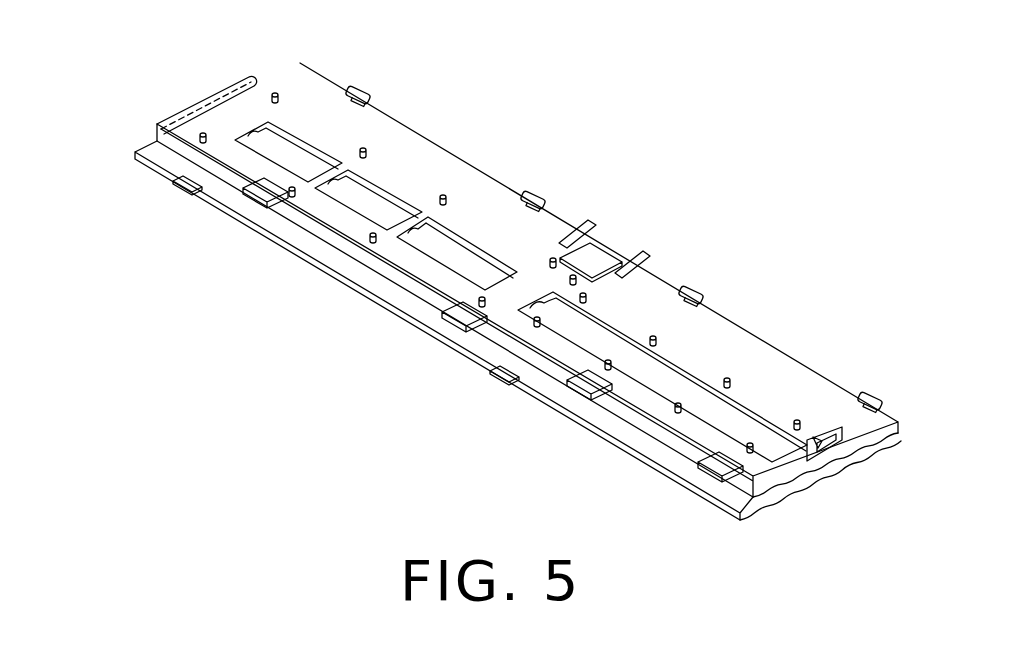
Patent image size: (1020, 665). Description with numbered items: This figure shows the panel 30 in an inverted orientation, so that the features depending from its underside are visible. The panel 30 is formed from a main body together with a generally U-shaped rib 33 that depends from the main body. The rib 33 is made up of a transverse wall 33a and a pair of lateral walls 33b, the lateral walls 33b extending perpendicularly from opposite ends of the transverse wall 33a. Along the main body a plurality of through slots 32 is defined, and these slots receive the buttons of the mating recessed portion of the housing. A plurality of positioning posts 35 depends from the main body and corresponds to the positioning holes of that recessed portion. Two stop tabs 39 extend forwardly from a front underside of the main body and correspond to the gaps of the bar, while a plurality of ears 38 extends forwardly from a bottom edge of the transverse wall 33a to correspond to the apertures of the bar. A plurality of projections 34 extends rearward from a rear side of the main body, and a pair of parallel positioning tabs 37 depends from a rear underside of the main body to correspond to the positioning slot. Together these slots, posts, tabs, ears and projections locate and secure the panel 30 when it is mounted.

The panel 30 is at (534, 157).
The through slots 32 is at (680, 385).
The rib 33 is at (325, 232).
The transverse wall 33a is at (385, 270).
The lateral walls 33b is at (213, 108).
The projections 34 is at (358, 88).
The positioning posts 35 is at (278, 94).
The positioning tabs 37 is at (582, 230).
The ears 38 is at (263, 197).
The stop tabs 39 is at (178, 190).